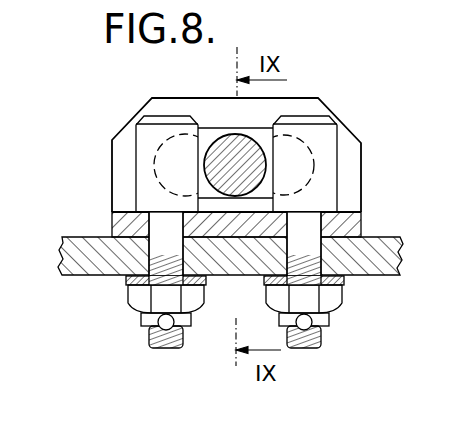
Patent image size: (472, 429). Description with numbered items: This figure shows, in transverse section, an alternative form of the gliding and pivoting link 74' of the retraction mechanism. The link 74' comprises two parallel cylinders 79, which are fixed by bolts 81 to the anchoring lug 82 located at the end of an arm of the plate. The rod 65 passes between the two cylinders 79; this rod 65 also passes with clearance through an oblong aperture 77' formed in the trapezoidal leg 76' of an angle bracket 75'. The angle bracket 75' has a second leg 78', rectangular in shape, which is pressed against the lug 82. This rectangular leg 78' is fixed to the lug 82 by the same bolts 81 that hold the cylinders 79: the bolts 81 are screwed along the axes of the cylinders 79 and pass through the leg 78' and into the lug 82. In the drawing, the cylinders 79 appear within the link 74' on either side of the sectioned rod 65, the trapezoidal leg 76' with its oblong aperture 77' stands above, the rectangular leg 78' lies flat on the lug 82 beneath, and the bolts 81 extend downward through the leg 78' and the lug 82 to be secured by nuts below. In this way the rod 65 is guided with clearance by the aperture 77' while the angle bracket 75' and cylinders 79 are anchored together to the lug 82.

The rod 65 is at (232, 162).
The link 74' is at (261, 136).
The angle bracket 75' is at (269, 187).
The trapezoidal leg 76' is at (216, 141).
The oblong aperture 77' is at (166, 151).
The rectangular leg 78' is at (267, 227).
The parallel cylinders 79 is at (148, 188).
The bolts 81 is at (140, 297).
The anchoring lug 82 is at (97, 253).